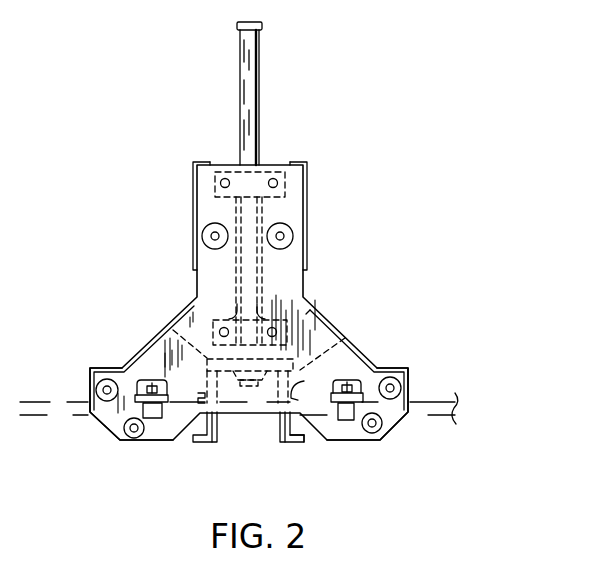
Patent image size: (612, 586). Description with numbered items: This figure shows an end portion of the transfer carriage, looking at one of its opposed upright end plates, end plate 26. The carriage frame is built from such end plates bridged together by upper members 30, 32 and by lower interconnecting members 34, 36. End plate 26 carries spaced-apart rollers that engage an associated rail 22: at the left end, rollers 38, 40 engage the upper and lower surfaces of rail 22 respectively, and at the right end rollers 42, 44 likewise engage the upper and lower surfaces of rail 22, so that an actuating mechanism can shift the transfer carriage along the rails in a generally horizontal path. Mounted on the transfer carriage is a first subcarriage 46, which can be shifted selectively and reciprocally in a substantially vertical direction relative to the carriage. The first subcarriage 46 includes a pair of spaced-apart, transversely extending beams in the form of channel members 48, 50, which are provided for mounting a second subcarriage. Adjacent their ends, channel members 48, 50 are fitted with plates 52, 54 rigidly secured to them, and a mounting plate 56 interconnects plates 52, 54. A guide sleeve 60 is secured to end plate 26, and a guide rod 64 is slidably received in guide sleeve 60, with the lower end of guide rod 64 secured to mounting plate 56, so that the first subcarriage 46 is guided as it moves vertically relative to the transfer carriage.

The rail 22 is at (423, 410).
The end plate 26 is at (280, 280).
The upper member 30 is at (195, 162).
The upper member 32 is at (292, 162).
The lower interconnecting member 34 is at (90, 388).
The lower interconnecting member 36 is at (409, 383).
The roller 38 is at (107, 380).
The roller 40 is at (134, 438).
The roller 42 is at (393, 378).
The roller 44 is at (372, 434).
The first subcarriage 46 is at (345, 338).
The channel member 48 is at (200, 440).
The channel member 50 is at (300, 440).
The plate 52 is at (220, 436).
The plate 54 is at (275, 443).
The mounting plate 56 is at (173, 330).
The guide sleeve 60 is at (285, 195).
The guide rod 64 is at (251, 147).